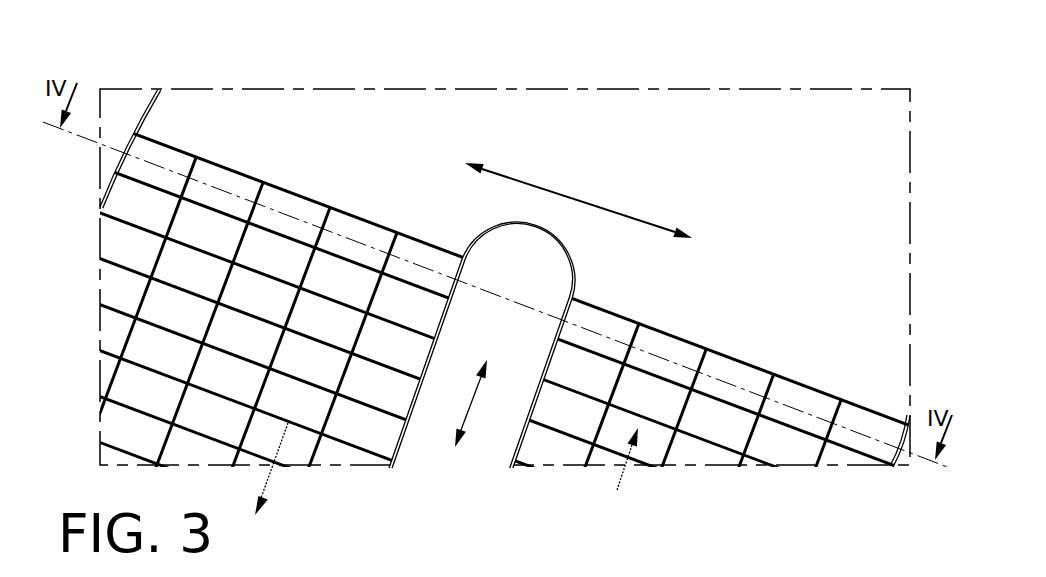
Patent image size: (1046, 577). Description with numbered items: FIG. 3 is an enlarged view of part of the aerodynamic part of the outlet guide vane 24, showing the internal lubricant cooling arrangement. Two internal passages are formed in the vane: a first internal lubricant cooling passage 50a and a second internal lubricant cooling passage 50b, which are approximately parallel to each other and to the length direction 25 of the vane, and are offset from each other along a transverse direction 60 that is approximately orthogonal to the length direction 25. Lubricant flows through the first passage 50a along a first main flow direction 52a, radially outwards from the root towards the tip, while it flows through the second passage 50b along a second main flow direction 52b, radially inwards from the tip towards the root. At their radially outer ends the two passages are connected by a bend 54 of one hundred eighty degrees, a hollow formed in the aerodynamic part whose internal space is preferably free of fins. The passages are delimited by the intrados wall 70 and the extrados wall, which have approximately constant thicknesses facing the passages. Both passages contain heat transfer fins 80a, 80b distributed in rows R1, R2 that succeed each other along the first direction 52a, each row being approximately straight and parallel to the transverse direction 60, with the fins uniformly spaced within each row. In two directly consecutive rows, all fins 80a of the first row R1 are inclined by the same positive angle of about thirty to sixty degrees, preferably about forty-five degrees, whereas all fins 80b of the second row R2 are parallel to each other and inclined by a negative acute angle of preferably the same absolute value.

The outlet guide vane 24 is at (760, 85).
The length direction 25 is at (473, 403).
The first internal lubricant cooling passage 50a is at (590, 458).
The second internal lubricant cooling passage 50b is at (366, 446).
The first main flow direction 52a is at (624, 492).
The second main flow direction 52b is at (273, 478).
The 180° bend 54 is at (735, 145).
The transverse direction 60 is at (570, 192).
The intrados wall 70 is at (130, 238).
The fins of the first row 80a is at (427, 253).
The fins of the second row 80b is at (460, 282).
The first row R1 is at (680, 465).
The second row R2 is at (820, 458).